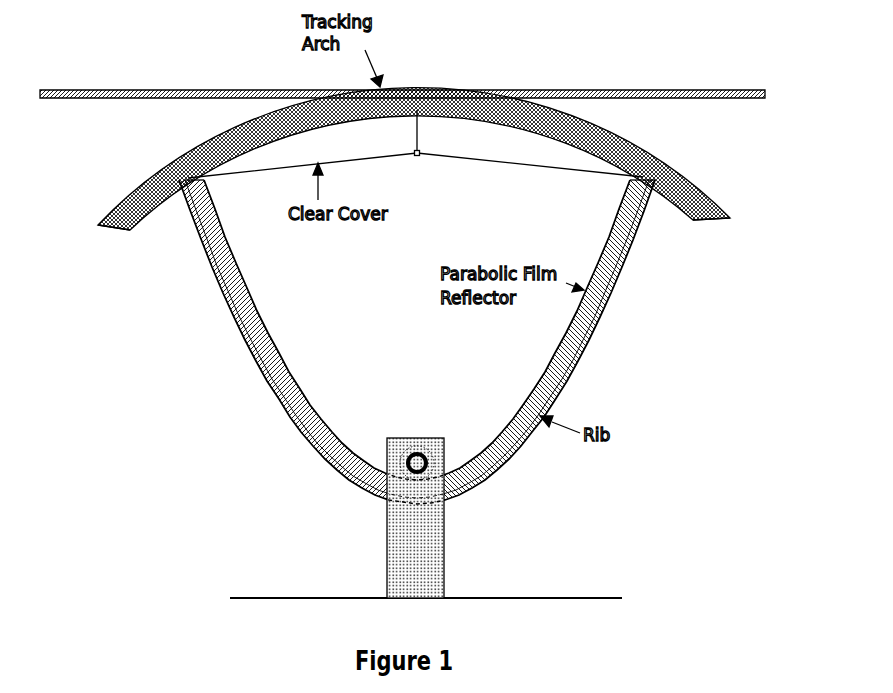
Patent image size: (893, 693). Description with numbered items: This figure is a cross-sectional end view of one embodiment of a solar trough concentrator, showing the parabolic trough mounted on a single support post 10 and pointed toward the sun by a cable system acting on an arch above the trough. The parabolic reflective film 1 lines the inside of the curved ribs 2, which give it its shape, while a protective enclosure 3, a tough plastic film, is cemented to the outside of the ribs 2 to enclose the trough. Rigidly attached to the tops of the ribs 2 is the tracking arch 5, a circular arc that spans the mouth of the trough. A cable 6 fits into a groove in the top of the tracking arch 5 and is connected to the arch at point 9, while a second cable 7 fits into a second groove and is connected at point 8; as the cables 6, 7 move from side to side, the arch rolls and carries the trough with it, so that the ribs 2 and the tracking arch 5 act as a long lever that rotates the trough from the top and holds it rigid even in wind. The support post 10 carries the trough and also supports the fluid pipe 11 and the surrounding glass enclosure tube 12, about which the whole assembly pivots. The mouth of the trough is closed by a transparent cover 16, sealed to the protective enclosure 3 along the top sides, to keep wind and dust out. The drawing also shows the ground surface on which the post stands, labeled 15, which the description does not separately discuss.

The reflective film 1 is at (258, 312).
The ribs 2 is at (270, 363).
The protective enclosure 3 is at (245, 347).
The tracking arch 5 is at (181, 148).
The cable 6 is at (200, 89).
The cable 7 is at (600, 88).
The connection point 8 is at (116, 202).
The connection point 9 is at (692, 182).
The support post 10 is at (386, 525).
The fluid pipe 11 is at (403, 462).
The glass enclosure tube 12 is at (436, 460).
The ground base 15 is at (500, 596).
The transparent cover 16 is at (543, 165).